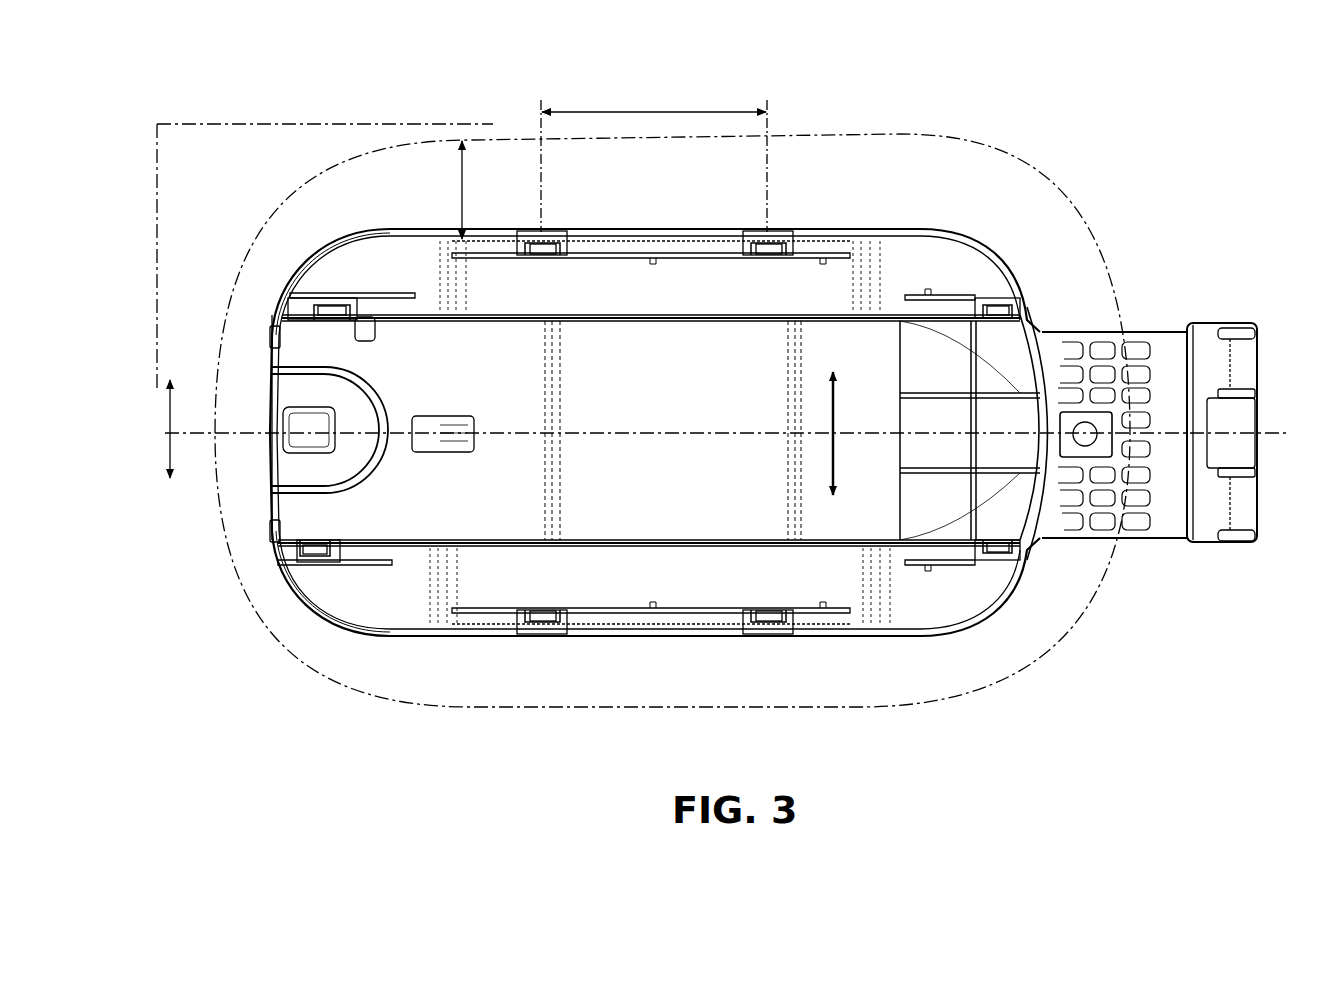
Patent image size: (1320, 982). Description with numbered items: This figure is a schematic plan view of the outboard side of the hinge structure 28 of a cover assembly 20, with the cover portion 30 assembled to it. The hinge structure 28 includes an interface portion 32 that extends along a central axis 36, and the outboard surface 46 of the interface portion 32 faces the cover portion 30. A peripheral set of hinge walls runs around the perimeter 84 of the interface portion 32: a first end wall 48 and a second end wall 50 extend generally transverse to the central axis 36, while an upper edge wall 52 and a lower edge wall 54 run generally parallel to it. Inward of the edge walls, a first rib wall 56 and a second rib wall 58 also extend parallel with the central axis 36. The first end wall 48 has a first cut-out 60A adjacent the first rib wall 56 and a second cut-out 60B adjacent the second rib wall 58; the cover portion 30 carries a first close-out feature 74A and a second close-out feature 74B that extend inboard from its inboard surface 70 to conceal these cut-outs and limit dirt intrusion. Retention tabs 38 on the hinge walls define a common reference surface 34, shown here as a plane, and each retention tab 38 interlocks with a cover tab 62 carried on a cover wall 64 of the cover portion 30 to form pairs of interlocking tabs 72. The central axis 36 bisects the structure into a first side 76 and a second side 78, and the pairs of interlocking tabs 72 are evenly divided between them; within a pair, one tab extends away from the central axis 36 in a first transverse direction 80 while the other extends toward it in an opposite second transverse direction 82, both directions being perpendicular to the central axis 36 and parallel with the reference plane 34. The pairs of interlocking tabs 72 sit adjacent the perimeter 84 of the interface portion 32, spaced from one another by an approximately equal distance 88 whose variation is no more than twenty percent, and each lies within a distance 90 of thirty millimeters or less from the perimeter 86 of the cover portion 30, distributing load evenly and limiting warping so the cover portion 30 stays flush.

The cover assembly 20 is at (1110, 150).
The hinge structure 28 is at (1148, 545).
The cover portion 30 is at (1030, 680).
The interface portion 32 is at (493, 585).
The common reference surface 34 is at (295, 122).
The central axis 36 is at (650, 415).
The retention tabs 38 is at (540, 240).
The outboard surface 46 is at (676, 483).
The first end wall 48 is at (268, 465).
The second end wall 50 is at (1072, 560).
The upper edge wall 52 is at (648, 640).
The lower edge wall 54 is at (628, 229).
The first rib wall 56 is at (780, 314).
The second rib wall 58 is at (775, 546).
The first cut-out 60A is at (272, 560).
The second cut-out 60B is at (274, 328).
The cover tabs 62 is at (331, 300).
The cover walls 64 is at (381, 294).
The inboard surface 70 is at (927, 669).
The pairs of interlocking tabs 72 is at (515, 236).
The first close-out feature 74A is at (272, 532).
The second close-out feature 74B is at (272, 345).
The first side 76 is at (838, 468).
The second side 78 is at (836, 395).
The first transverse direction 80 is at (172, 407).
The second transverse direction 82 is at (168, 462).
The perimeter 84 is at (676, 236).
The perimeter 86 is at (838, 136).
The approximately equal distance 88 is at (656, 111).
The distance 90 is at (462, 182).